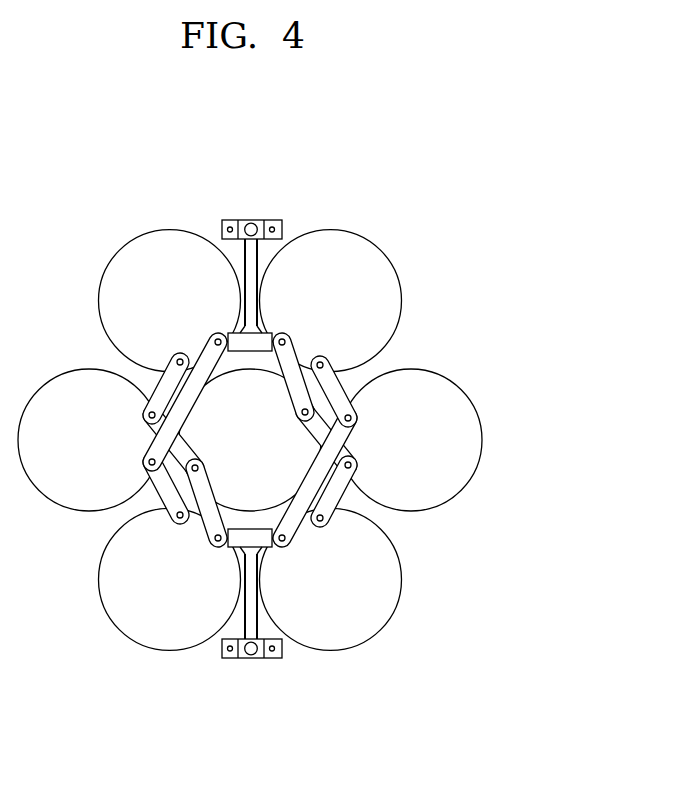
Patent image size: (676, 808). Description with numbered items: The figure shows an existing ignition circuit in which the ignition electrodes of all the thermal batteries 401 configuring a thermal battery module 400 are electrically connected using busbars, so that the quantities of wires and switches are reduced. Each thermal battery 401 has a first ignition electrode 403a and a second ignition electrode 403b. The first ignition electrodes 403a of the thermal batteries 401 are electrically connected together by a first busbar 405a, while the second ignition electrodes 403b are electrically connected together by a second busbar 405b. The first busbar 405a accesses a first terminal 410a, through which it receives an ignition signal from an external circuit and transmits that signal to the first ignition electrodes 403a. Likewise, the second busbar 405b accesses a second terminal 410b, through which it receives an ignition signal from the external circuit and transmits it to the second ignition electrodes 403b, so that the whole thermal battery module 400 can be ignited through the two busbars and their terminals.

The thermal battery module 400 is at (543, 142).
The thermal battery 401 is at (378, 268).
The first ignition electrode 403a is at (330, 360).
The second ignition electrode 403b is at (287, 333).
The first busbar 405a is at (312, 483).
The second busbar 405b is at (207, 358).
The first terminal 410a is at (251, 658).
The second terminal 410b is at (252, 220).